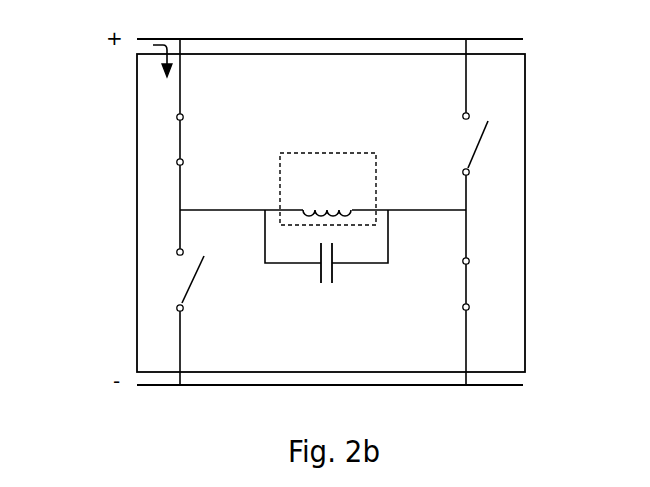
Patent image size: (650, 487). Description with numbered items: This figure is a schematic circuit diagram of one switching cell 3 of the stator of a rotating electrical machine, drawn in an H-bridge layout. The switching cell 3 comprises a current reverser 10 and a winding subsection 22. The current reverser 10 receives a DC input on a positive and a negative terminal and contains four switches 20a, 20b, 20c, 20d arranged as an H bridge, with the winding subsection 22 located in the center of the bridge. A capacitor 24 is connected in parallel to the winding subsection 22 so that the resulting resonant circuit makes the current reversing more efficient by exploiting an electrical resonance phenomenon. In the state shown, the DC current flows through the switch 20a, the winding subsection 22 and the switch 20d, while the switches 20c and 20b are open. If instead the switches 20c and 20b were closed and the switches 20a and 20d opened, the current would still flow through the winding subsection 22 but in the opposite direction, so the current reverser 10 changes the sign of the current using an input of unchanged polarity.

The switching cell 3 is at (94, 64).
The current reverser 10 is at (340, 89).
The switch 20a is at (213, 131).
The switch 20b is at (192, 283).
The switch 20c is at (508, 146).
The switch 20d is at (500, 285).
The winding subsection 22 is at (333, 210).
The capacitor 24 is at (337, 272).